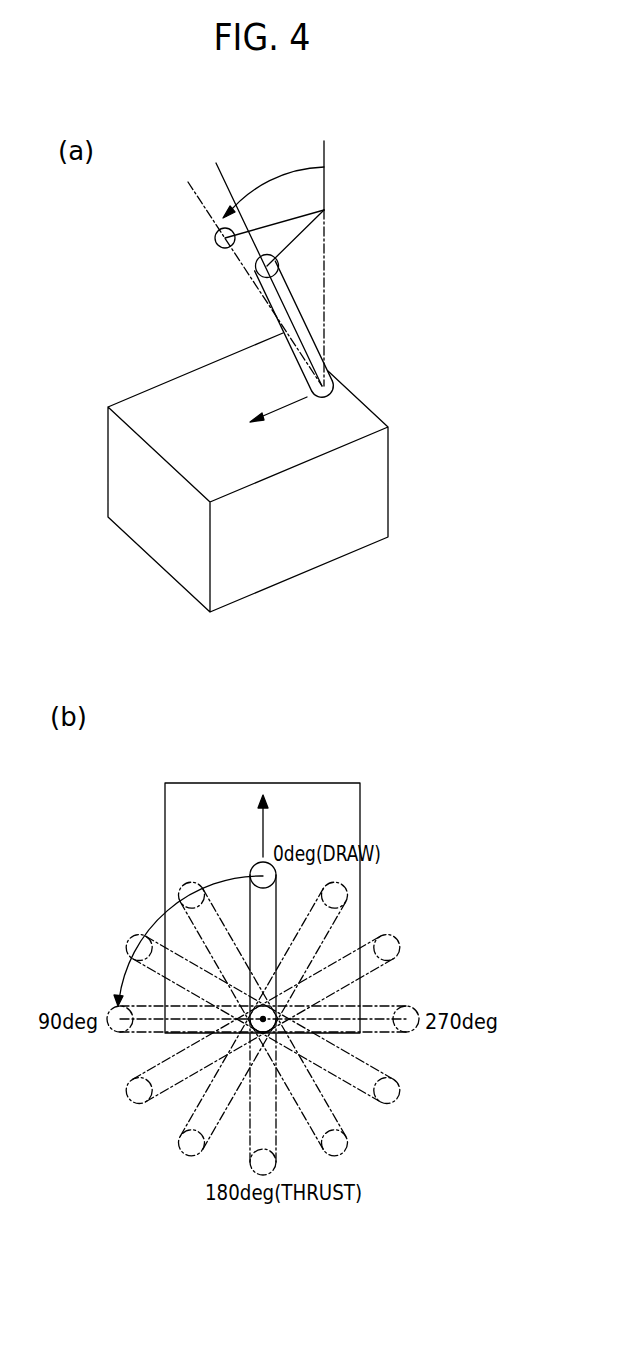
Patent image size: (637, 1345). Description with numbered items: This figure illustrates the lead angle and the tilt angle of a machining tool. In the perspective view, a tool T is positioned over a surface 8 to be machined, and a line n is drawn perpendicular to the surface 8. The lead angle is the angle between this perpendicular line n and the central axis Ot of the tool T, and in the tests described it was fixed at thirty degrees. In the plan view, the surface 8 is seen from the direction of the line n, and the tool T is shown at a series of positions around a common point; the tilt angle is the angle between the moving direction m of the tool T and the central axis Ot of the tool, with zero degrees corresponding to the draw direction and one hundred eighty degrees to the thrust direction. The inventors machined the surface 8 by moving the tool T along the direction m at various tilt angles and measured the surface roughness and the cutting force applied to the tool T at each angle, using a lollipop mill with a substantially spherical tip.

The surface to be machined 8 is at (168, 408).
The tool T is at (277, 328).
The line perpendicular to the surface to be machined n is at (324, 270).
The moving direction of the tool m is at (269, 627).
The central axis of the tool Ot is at (203, 210).